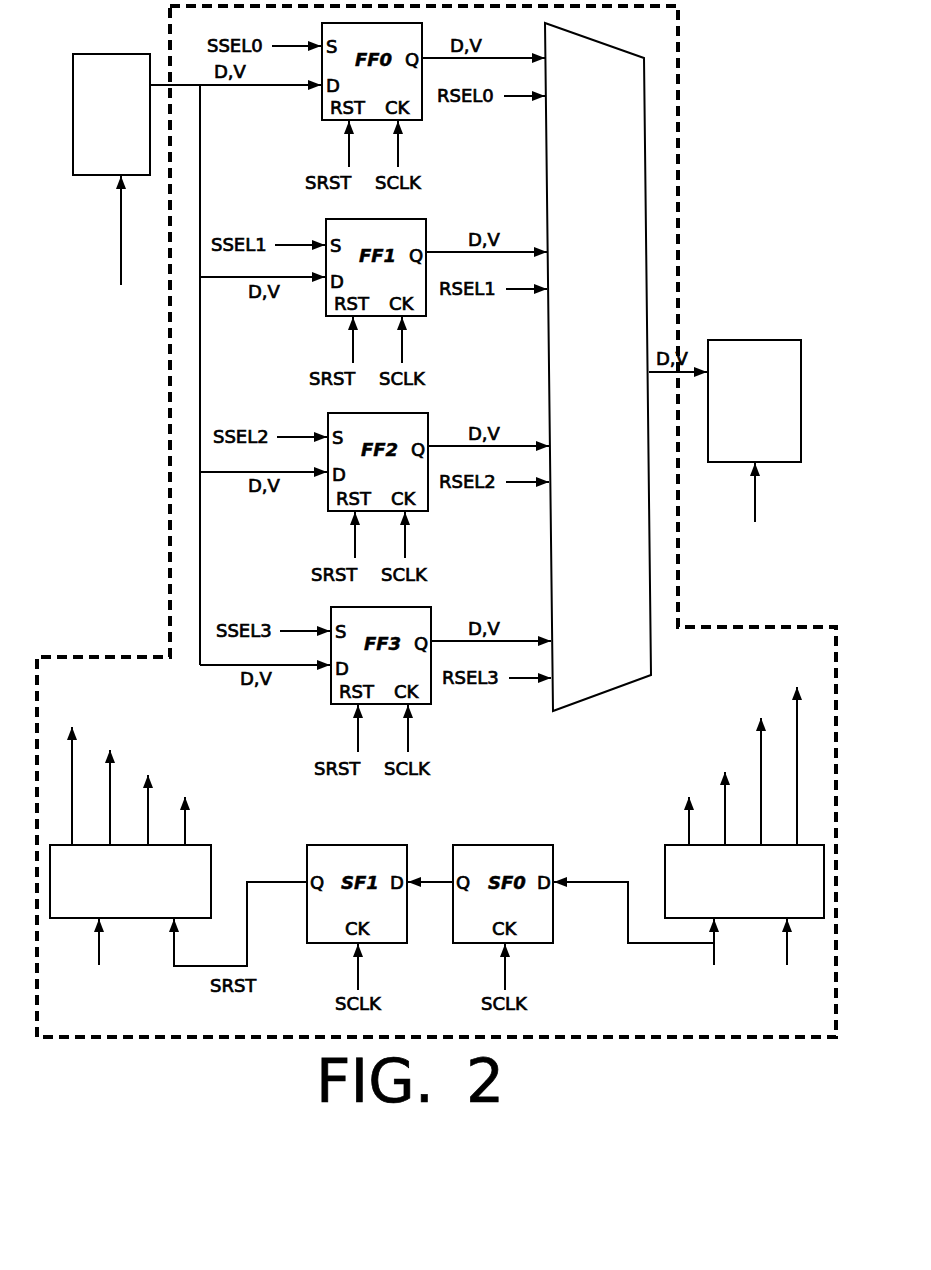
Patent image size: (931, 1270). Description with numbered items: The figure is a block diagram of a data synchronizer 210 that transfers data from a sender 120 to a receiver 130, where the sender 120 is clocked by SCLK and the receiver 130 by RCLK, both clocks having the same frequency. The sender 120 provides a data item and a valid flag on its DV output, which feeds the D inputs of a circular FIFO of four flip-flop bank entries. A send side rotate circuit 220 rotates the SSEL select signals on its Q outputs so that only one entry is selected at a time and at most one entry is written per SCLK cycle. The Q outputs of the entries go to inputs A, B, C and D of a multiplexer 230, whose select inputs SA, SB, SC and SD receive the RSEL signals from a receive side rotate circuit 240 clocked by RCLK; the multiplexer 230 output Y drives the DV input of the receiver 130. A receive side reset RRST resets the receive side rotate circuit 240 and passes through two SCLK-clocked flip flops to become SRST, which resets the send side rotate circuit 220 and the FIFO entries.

The data synchronizer 210 is at (681, 140).
The sender 120 is at (137, 154).
The receiver 130 is at (785, 449).
The multiplexer 230 is at (615, 344).
The send side rotate circuit 220 is at (155, 893).
The receive side rotate circuit 240 is at (767, 893).